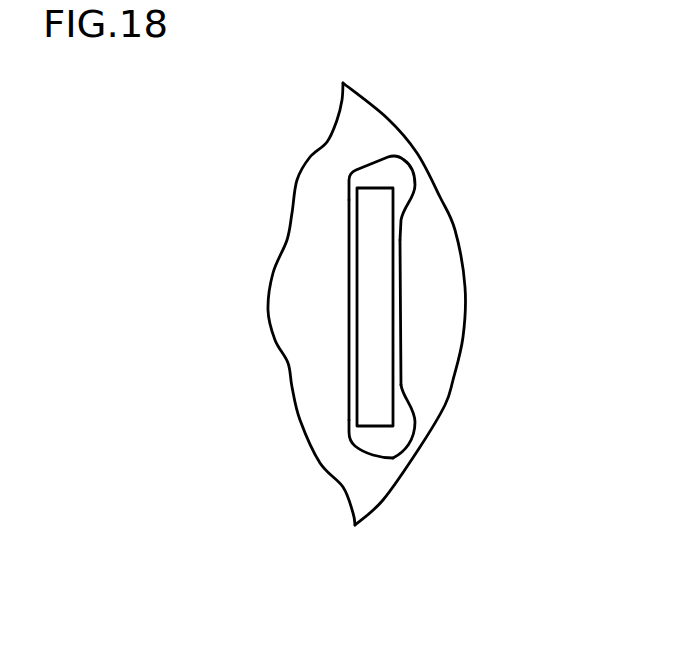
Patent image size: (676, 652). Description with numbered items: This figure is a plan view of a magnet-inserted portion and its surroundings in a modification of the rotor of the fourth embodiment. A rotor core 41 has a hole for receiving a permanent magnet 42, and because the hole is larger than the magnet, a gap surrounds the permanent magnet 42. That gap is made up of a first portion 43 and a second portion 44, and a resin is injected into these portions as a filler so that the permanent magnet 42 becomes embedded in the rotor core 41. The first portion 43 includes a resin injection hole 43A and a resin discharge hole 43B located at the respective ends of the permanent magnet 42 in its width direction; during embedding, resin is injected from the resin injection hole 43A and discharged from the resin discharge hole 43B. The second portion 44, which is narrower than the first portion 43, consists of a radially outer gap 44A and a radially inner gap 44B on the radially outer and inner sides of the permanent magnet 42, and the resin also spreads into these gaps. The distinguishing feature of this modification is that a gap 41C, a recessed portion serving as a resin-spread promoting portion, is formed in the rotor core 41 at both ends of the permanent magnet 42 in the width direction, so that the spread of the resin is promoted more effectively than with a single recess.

The rotor core 41 is at (368, 123).
The gap 41C is at (408, 187).
The permanent magnet 42 is at (380, 295).
The first portion 43 is at (224, 297).
The resin injection hole 43A is at (245, 442).
The resin discharge hole 43B is at (375, 177).
The second portion 44 is at (264, 310).
The radially outer gap 44A is at (395, 327).
The radially inner gap 44B is at (352, 245).